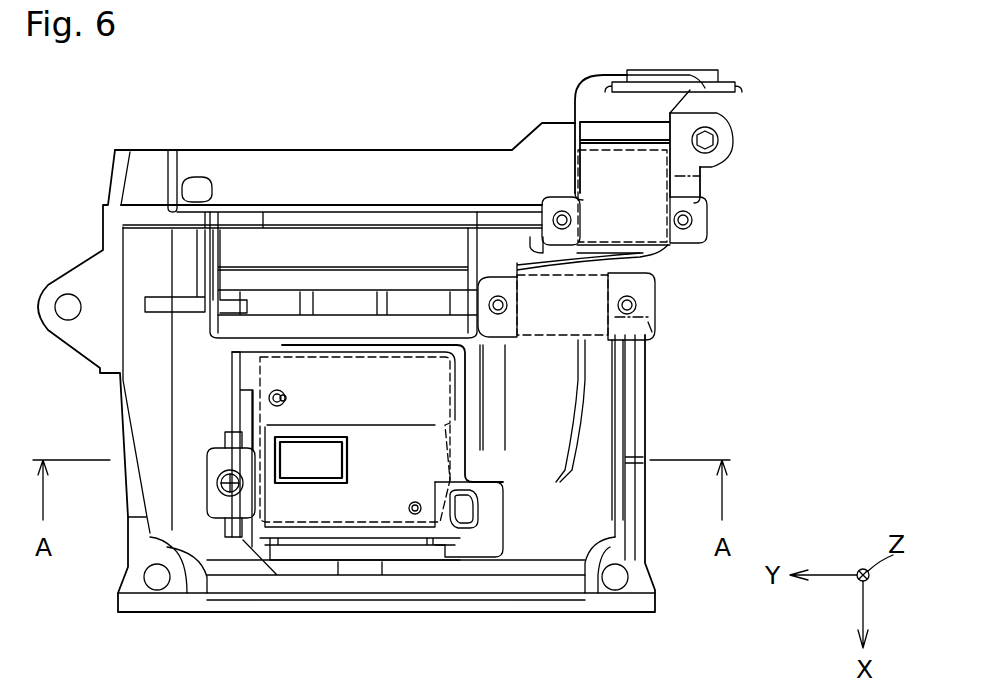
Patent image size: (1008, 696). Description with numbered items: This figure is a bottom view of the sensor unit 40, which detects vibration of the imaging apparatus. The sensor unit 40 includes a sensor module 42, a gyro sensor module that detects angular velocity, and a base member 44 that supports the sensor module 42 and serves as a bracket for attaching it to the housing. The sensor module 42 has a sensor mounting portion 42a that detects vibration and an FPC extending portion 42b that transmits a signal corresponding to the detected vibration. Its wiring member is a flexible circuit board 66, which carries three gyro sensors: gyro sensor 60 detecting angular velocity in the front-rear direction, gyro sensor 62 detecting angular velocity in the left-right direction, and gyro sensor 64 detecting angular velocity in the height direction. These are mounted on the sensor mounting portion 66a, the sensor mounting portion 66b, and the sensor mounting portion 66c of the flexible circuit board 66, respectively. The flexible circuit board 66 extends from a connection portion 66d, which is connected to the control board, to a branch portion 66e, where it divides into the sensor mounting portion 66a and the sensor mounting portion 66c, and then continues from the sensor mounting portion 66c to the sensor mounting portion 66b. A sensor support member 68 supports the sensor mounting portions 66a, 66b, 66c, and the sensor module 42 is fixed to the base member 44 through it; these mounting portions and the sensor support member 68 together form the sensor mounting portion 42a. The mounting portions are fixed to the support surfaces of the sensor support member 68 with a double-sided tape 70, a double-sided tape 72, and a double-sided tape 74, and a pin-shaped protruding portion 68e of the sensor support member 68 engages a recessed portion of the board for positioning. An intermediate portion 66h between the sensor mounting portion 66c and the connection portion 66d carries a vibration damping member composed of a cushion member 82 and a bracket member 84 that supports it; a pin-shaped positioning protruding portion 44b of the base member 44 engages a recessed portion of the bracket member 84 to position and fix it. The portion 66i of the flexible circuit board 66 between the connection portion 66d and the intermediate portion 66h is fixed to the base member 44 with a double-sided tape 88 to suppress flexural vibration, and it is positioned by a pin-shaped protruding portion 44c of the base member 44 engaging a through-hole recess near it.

The sensor unit 40 is at (205, 130).
The sensor module 42 is at (597, 492).
The sensor mounting portion 42a is at (205, 386).
The FPC extending portion 42b is at (520, 252).
The base member 44 is at (357, 158).
The positioning protruding portion 44b is at (490, 303).
The protruding portion 44c is at (555, 222).
The gyro sensor 60 is at (356, 577).
The gyro sensor 62 is at (212, 452).
The gyro sensor 64 is at (324, 474).
The flexible circuit board 66 is at (575, 391).
The sensor mounting portion 66a is at (420, 566).
The sensor mounting portion 66b is at (232, 420).
The sensor mounting portion 66c is at (415, 414).
The connection portion 66d is at (677, 73).
The branch portion 66e is at (563, 461).
The intermediate portion 66h is at (580, 302).
The portion 66i is at (620, 192).
The sensor support member 68 is at (458, 535).
The protruding portion 68e is at (290, 399).
The double-sided tape 70 is at (363, 545).
The double-sided tape 72 is at (257, 402).
The double-sided tape 74 is at (452, 448).
The cushion member 82 is at (650, 317).
The bracket member 84 is at (648, 327).
The double-sided tape 88 is at (700, 176).